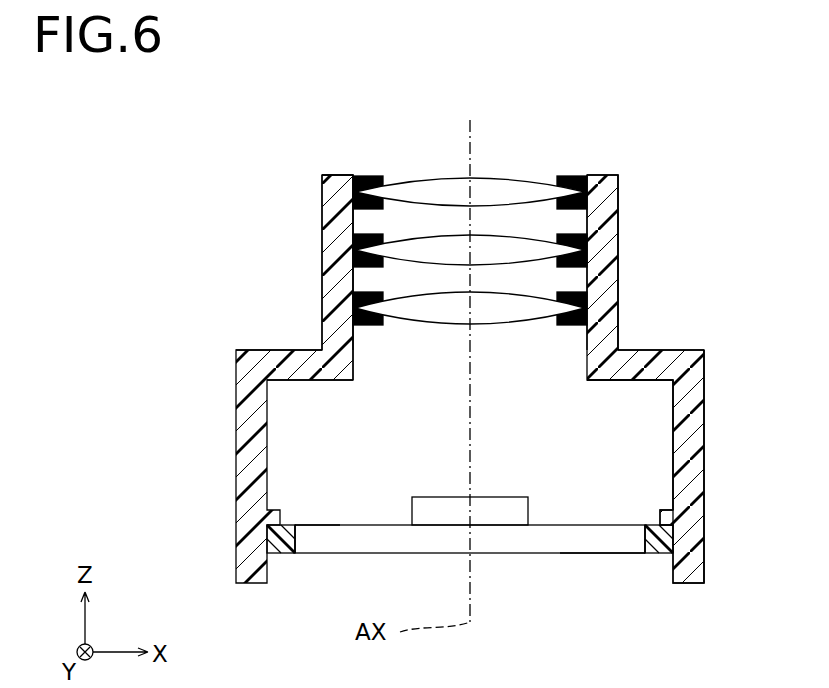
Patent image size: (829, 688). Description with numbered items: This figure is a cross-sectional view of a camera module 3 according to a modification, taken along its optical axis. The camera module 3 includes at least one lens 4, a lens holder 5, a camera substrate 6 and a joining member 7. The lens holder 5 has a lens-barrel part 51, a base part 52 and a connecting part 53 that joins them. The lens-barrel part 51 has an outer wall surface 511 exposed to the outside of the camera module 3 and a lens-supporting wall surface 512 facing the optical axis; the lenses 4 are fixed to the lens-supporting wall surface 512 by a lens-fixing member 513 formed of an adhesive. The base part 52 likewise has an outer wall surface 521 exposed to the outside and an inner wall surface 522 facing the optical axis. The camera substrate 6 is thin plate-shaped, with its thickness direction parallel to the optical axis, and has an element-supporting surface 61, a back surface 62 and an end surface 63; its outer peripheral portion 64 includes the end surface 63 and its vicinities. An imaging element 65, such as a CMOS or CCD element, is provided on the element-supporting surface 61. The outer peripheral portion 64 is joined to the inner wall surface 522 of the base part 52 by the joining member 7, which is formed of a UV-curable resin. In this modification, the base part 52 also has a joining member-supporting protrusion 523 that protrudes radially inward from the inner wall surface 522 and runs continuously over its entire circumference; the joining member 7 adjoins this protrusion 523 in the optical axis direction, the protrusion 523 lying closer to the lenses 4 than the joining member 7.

The camera module 3 is at (226, 132).
The lens 4 is at (506, 182).
The lens holder 5 is at (705, 350).
The lens-barrel part 51 is at (612, 258).
The outer wall surface 511 is at (620, 226).
The lens-supporting wall surface 512 is at (357, 352).
The lens-fixing member 513 is at (361, 174).
The base part 52 is at (697, 452).
The outer wall surface 521 is at (705, 515).
The inner wall surface 522 is at (673, 383).
The joining member-supporting protrusion 523 is at (660, 510).
The connecting part 53 is at (288, 355).
The camera substrate 6 is at (538, 540).
The element-supporting surface 61 is at (300, 498).
The back surface 62 is at (310, 556).
The end surface 63 is at (660, 556).
The outer peripheral portion 64 is at (628, 552).
The imaging element 65 is at (510, 505).
The joining member 7 is at (655, 530).